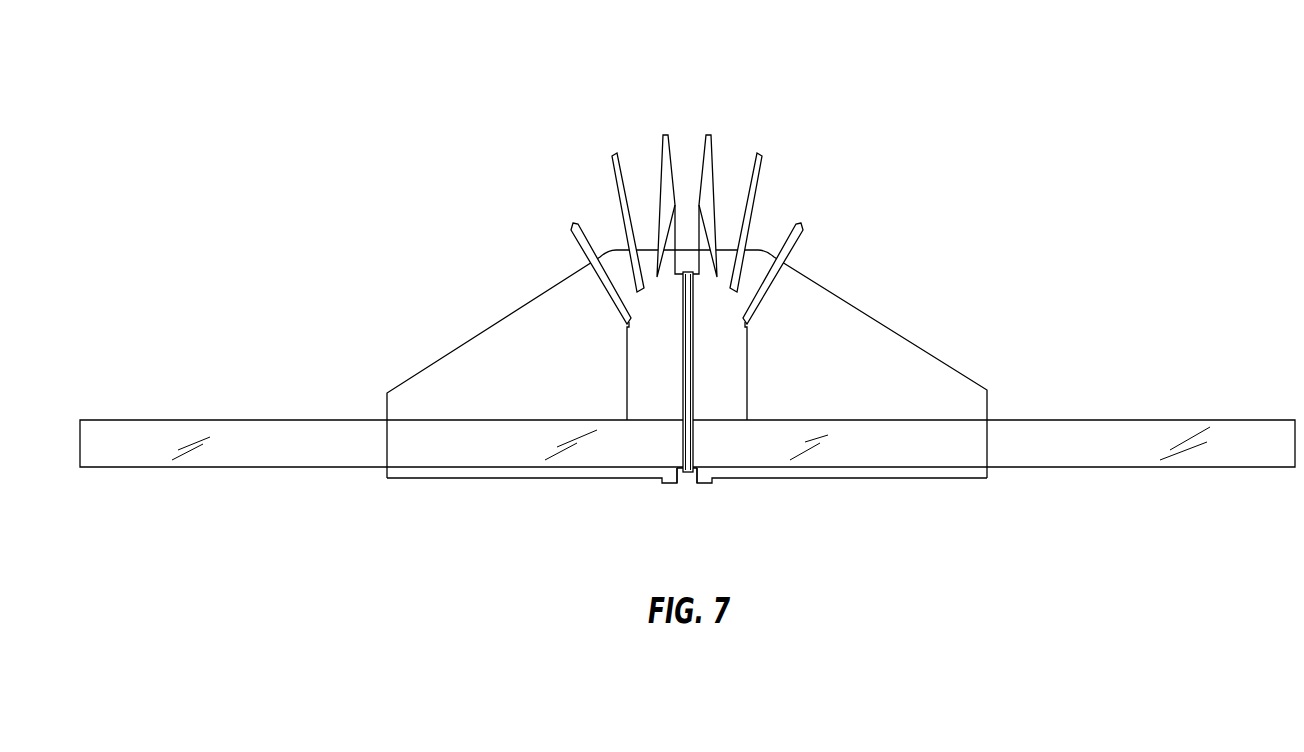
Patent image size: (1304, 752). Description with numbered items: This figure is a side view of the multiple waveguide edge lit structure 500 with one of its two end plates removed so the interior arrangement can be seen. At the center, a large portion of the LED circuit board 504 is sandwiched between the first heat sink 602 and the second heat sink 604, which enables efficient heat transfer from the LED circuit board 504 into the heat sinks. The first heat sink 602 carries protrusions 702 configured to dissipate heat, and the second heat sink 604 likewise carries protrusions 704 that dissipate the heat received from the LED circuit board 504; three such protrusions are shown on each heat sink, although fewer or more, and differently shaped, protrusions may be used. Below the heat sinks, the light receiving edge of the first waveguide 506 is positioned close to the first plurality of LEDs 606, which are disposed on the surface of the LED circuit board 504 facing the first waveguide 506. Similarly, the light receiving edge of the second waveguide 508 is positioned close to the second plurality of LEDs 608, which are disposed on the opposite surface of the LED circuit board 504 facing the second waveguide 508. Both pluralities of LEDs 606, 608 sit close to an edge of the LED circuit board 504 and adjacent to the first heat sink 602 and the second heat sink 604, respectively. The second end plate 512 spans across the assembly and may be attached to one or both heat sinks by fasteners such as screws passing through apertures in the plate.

The multiple waveguide edge lit structure 500 is at (1038, 77).
The LED circuit board 504 is at (693, 365).
The first waveguide 506 is at (268, 433).
The second waveguide 508 is at (1110, 433).
The second end plate 512 is at (543, 295).
The first heat sink 602 is at (638, 375).
The second heat sink 604 is at (733, 362).
The first plurality of LEDs 606 is at (682, 428).
The second plurality of LEDs 608 is at (694, 428).
The protrusions 702 is at (613, 183).
The protrusions 704 is at (760, 183).